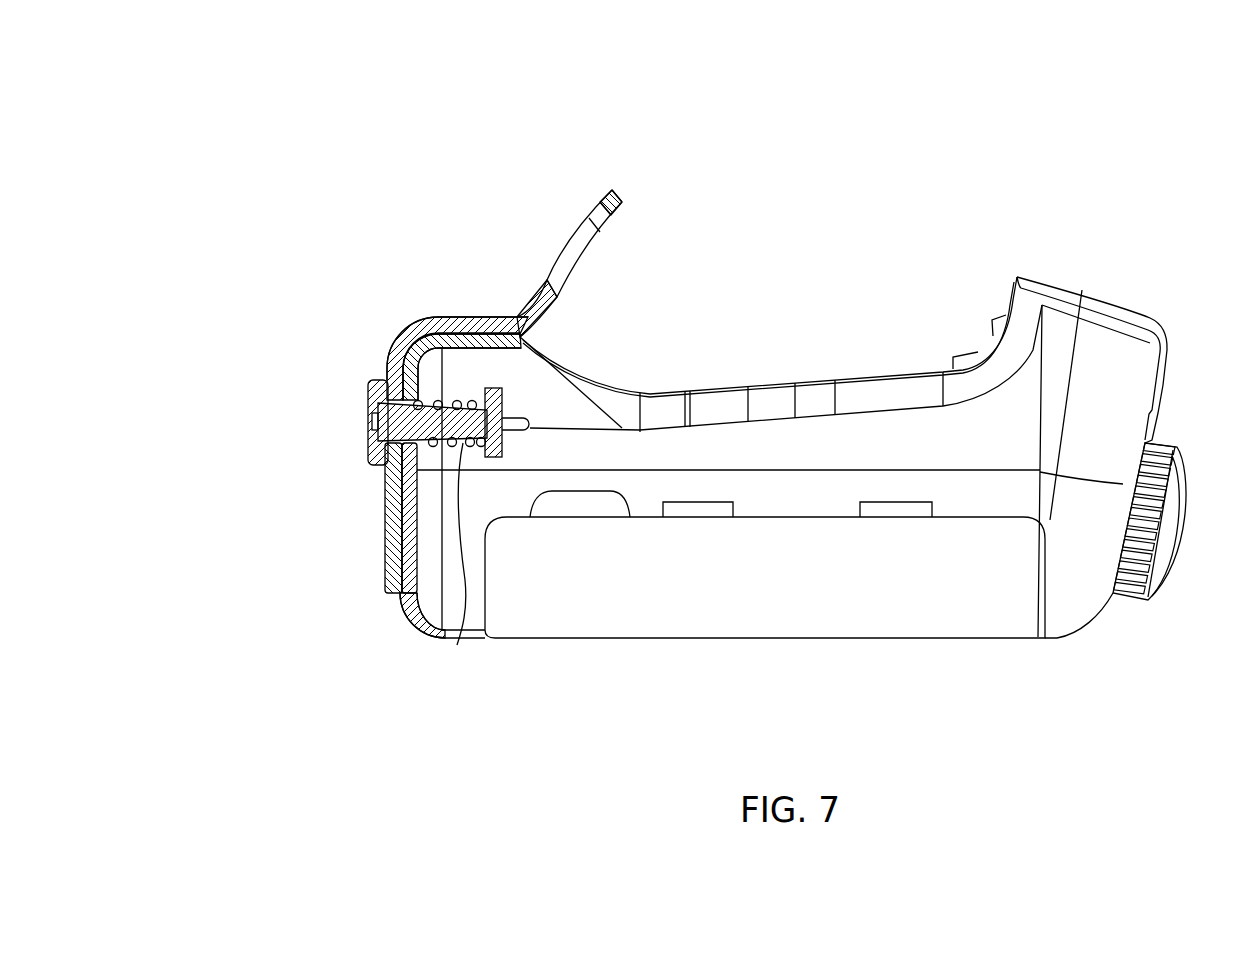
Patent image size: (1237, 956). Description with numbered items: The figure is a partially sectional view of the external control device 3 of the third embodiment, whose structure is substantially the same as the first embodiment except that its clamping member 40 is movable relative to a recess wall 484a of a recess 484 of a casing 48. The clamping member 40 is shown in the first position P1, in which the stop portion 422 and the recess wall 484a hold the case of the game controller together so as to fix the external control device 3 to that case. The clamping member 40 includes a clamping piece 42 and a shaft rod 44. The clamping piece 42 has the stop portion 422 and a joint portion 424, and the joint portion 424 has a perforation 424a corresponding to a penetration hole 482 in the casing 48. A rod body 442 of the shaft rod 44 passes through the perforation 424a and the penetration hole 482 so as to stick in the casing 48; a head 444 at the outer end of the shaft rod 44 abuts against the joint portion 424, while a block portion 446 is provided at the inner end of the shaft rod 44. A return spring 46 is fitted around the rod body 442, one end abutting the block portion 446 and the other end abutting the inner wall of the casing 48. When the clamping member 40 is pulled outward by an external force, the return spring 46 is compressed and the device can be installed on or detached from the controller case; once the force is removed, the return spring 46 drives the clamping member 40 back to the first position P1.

The external control device 3 is at (1125, 212).
The clamping member 40 is at (296, 622).
The clamping piece 42 is at (490, 148).
The stop portion 422 is at (555, 250).
The joint portion 424 is at (420, 322).
The perforation 424a is at (397, 453).
The rod body 442 is at (398, 512).
The button cap 444 is at (368, 392).
The block portion 446 is at (505, 406).
The shaft rod 44 is at (423, 432).
The return spring 46 is at (457, 645).
The casing 48 is at (560, 645).
The penetration hole 482 is at (370, 427).
The recess 484 is at (880, 373).
The recess wall 484a is at (1010, 302).
The first position P1 is at (592, 172).